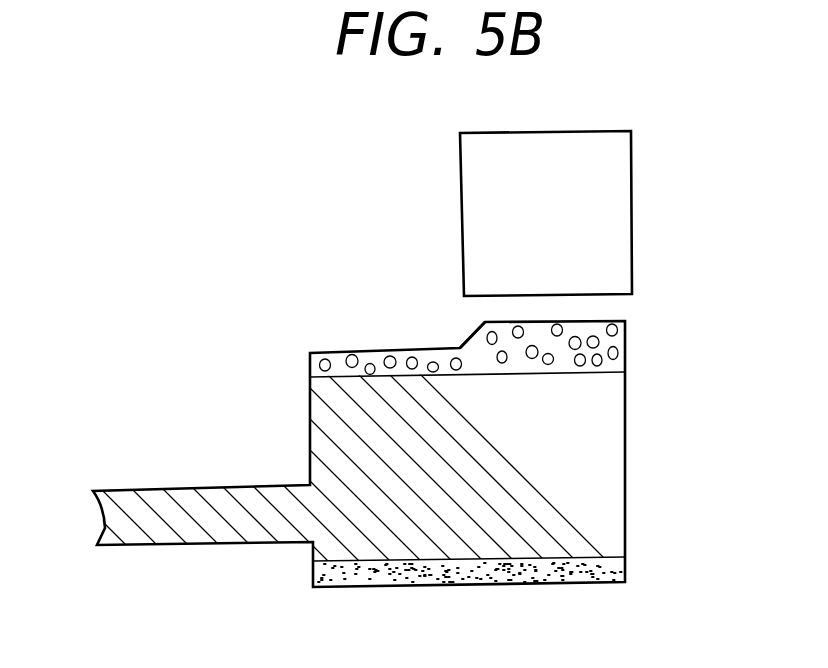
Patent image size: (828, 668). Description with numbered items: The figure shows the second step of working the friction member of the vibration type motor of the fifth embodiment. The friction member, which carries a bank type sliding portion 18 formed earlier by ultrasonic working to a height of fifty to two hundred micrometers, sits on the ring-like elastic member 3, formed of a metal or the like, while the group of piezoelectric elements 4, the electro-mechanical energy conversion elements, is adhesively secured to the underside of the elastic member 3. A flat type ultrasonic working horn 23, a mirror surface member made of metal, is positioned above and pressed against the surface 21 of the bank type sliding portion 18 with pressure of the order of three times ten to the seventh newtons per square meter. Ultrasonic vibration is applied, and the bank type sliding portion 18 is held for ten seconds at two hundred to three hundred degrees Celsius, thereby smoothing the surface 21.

The elastic member 3 is at (617, 455).
The group of piezoelectric elements 4 is at (618, 567).
The bank type sliding portion 18 is at (542, 327).
The surface 21 is at (497, 320).
The flat type ultrasonic working horn 23 is at (617, 200).